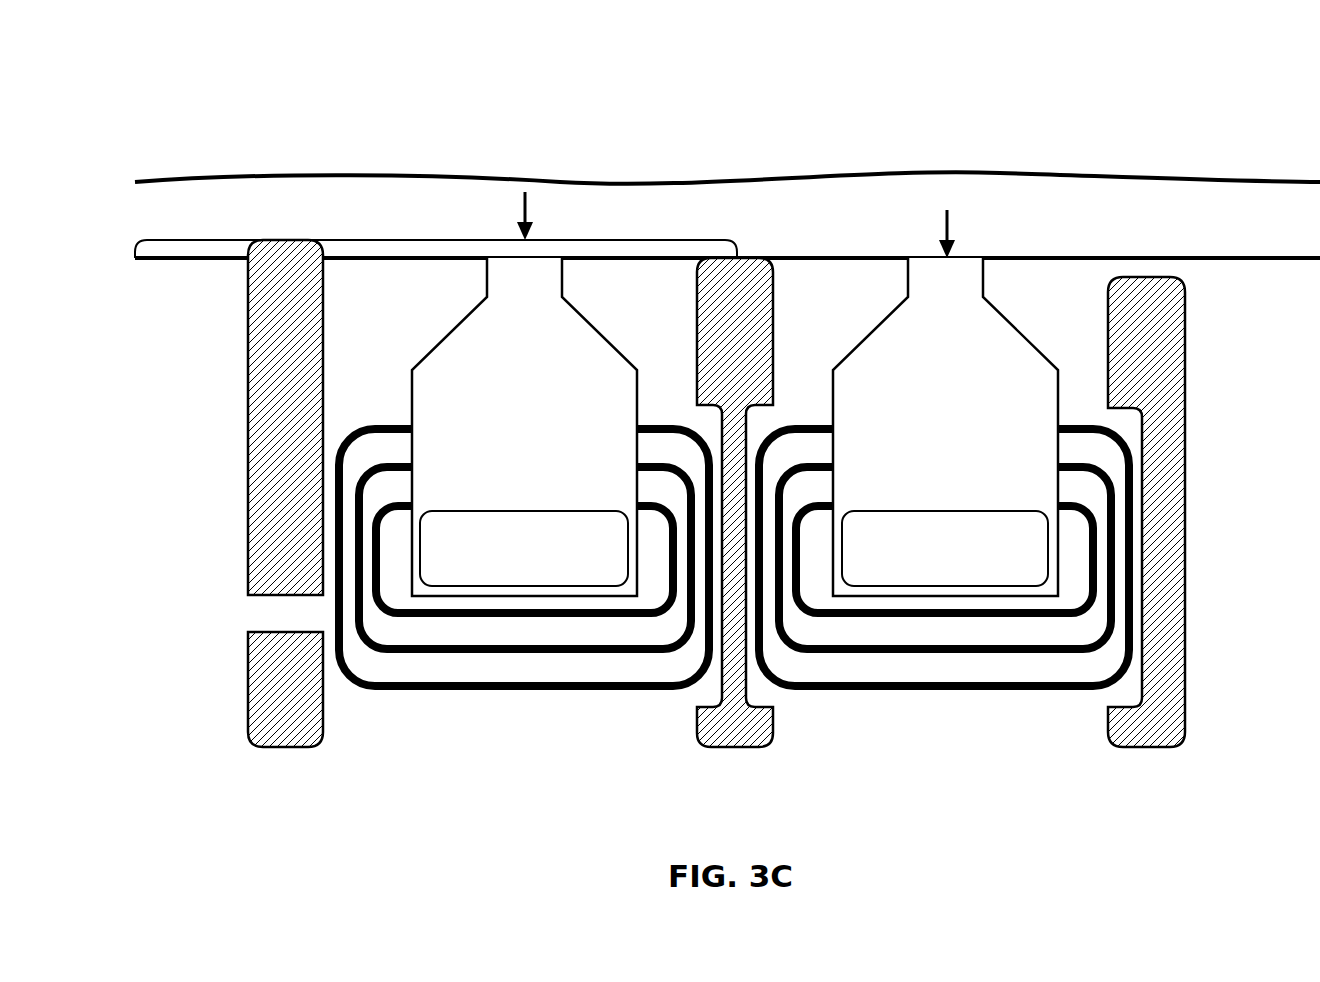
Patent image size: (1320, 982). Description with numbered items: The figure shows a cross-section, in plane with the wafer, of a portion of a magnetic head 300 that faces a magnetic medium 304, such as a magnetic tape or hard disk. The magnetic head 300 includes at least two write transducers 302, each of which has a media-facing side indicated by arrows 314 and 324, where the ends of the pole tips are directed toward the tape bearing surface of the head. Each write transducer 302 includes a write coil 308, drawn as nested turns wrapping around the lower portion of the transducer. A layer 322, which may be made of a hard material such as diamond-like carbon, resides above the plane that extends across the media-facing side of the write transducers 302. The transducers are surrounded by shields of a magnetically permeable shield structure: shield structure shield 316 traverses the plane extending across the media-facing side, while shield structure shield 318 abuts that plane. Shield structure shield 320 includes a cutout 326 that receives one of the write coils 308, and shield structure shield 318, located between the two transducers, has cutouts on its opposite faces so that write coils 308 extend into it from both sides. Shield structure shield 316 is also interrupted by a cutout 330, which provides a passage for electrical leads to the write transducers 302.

The magnetic head 300 is at (232, 68).
The write transducer 302 is at (603, 338).
The magnetic medium 304 is at (621, 181).
The write coil 308 is at (827, 694).
The arrow 314 is at (949, 222).
The shield structure shield 316 is at (323, 321).
The shield structure shield 318 is at (773, 325).
The shield structure shield 320 is at (1185, 312).
The layer 322 is at (176, 240).
The arrow 324 is at (528, 202).
The cutout 326 is at (1100, 703).
The cutout for electrical leads 330 is at (245, 615).